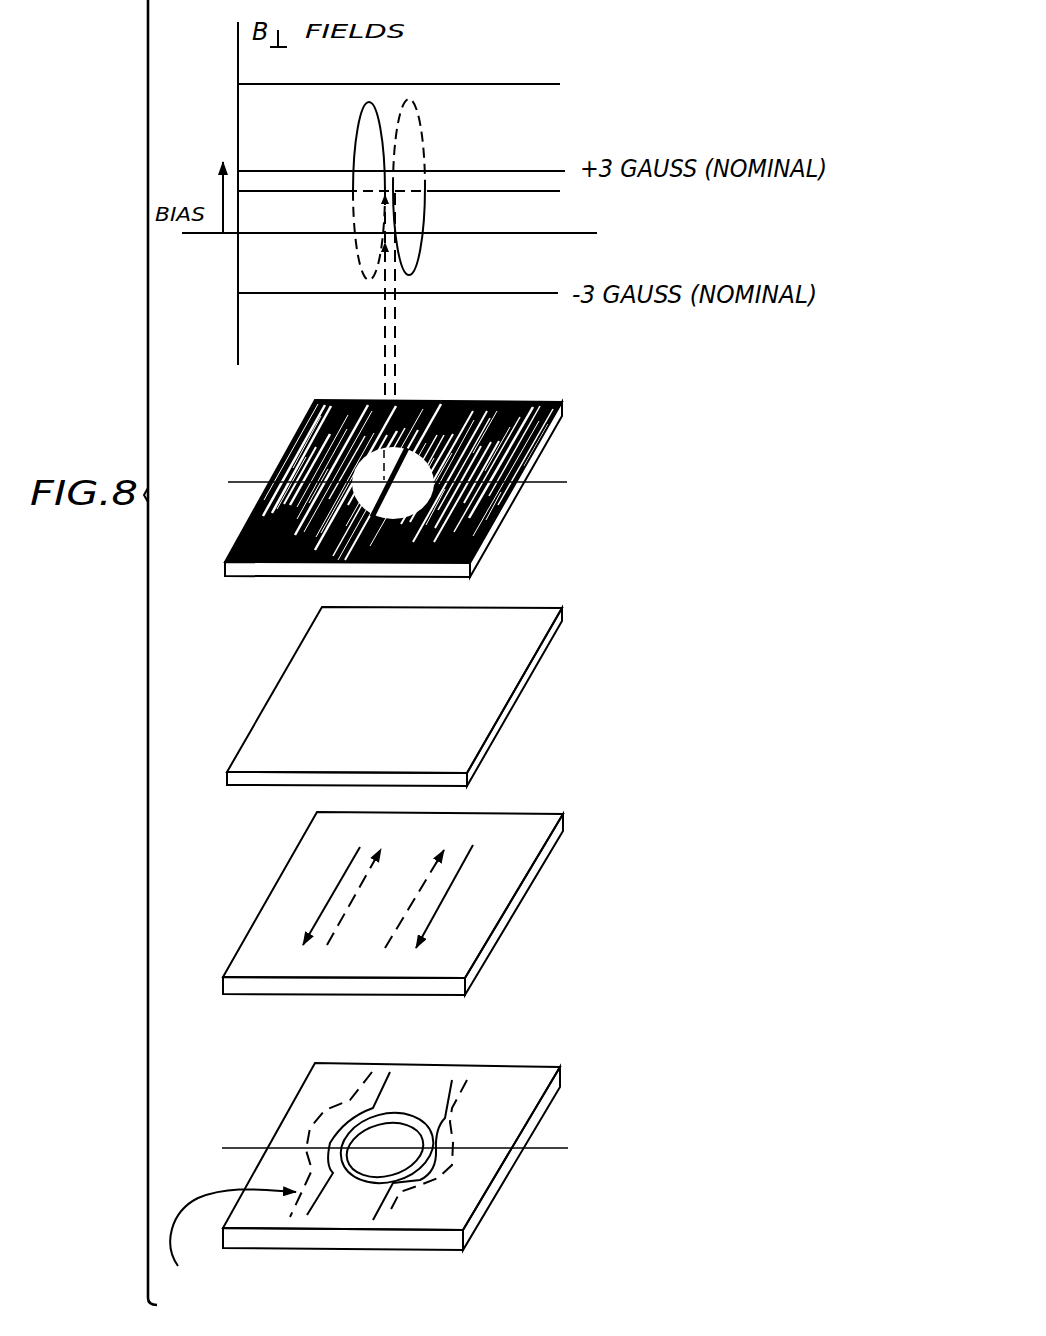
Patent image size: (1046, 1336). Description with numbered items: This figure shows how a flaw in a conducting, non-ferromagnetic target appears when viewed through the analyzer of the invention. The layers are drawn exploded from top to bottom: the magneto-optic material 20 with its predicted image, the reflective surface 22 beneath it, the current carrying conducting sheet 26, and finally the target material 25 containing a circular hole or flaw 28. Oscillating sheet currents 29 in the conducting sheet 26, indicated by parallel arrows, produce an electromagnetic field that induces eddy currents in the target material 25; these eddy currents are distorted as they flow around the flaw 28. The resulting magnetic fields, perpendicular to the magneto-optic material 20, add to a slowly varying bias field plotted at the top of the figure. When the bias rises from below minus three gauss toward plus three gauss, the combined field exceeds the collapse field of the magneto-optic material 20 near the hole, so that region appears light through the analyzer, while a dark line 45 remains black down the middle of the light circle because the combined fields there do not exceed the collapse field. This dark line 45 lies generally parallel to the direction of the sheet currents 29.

The magneto-optic material 20 is at (532, 494).
The reflective surface 22 is at (524, 705).
The current carrying conducting sheet 26 is at (566, 893).
The sheet currents 29 is at (451, 903).
The target material 25 is at (490, 1151).
The flaw 28 is at (396, 1116).
The dark line 45 is at (296, 438).